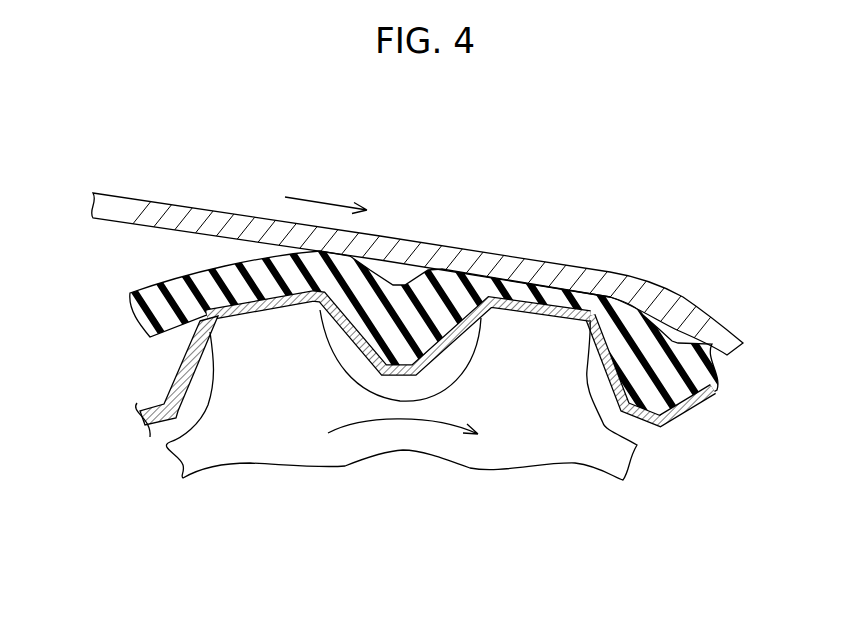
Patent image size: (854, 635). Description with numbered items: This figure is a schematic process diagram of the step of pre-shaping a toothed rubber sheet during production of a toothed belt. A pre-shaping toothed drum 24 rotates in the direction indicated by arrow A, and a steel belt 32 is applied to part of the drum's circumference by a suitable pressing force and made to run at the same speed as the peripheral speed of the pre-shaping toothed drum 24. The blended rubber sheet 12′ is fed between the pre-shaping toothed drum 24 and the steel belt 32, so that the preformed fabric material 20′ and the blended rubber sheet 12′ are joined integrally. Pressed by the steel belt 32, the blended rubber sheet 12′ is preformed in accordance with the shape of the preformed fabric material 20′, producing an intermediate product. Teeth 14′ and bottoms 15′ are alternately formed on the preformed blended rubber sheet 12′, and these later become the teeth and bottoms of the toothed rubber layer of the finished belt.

The steel belt 32 is at (160, 216).
The blended rubber sheet 12′ is at (121, 317).
The teeth 14′ is at (696, 427).
The bottoms 15′ is at (545, 333).
The preformed fabric material 20′ is at (178, 375).
The pre-shaping toothed drum 24 is at (595, 482).
The rotation direction arrow A is at (400, 422).